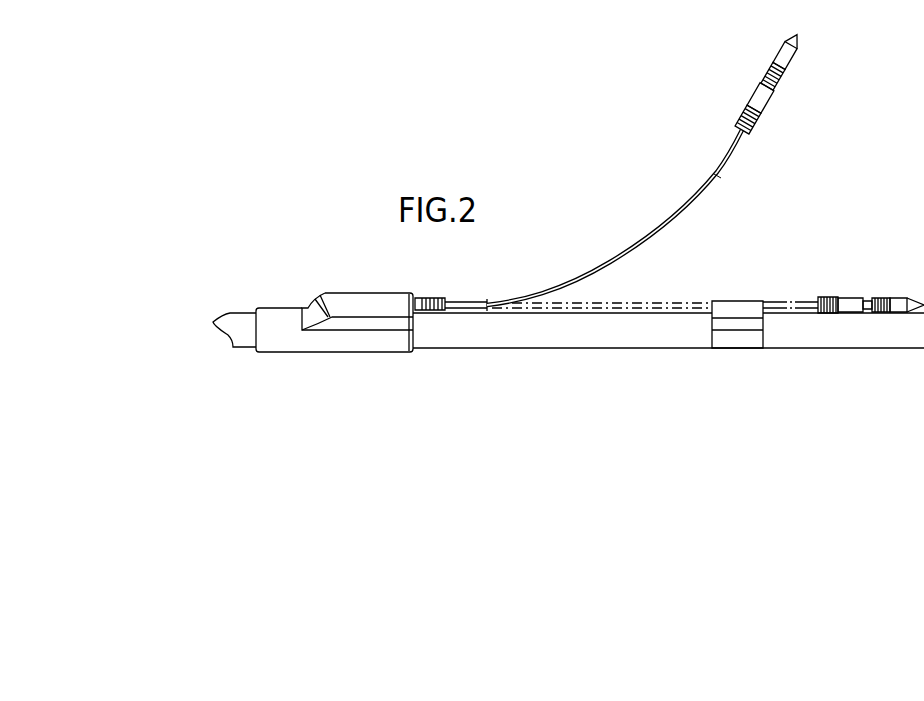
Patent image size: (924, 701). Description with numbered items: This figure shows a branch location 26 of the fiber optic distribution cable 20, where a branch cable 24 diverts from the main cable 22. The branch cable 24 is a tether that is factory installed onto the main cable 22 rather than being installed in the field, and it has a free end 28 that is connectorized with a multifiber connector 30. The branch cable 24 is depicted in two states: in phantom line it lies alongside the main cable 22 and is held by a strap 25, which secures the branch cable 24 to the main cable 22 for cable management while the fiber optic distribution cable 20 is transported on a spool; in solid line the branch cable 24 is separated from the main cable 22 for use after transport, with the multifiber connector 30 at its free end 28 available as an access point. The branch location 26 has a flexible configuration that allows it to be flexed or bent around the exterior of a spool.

The fiber optic distribution cable 20 is at (332, 363).
The main cable 22 is at (572, 348).
The branch cable 24 is at (728, 167).
The strap 25 is at (742, 340).
The branch location 26 is at (277, 357).
The free end 28 is at (738, 130).
The multifiber connector 30 is at (797, 58).